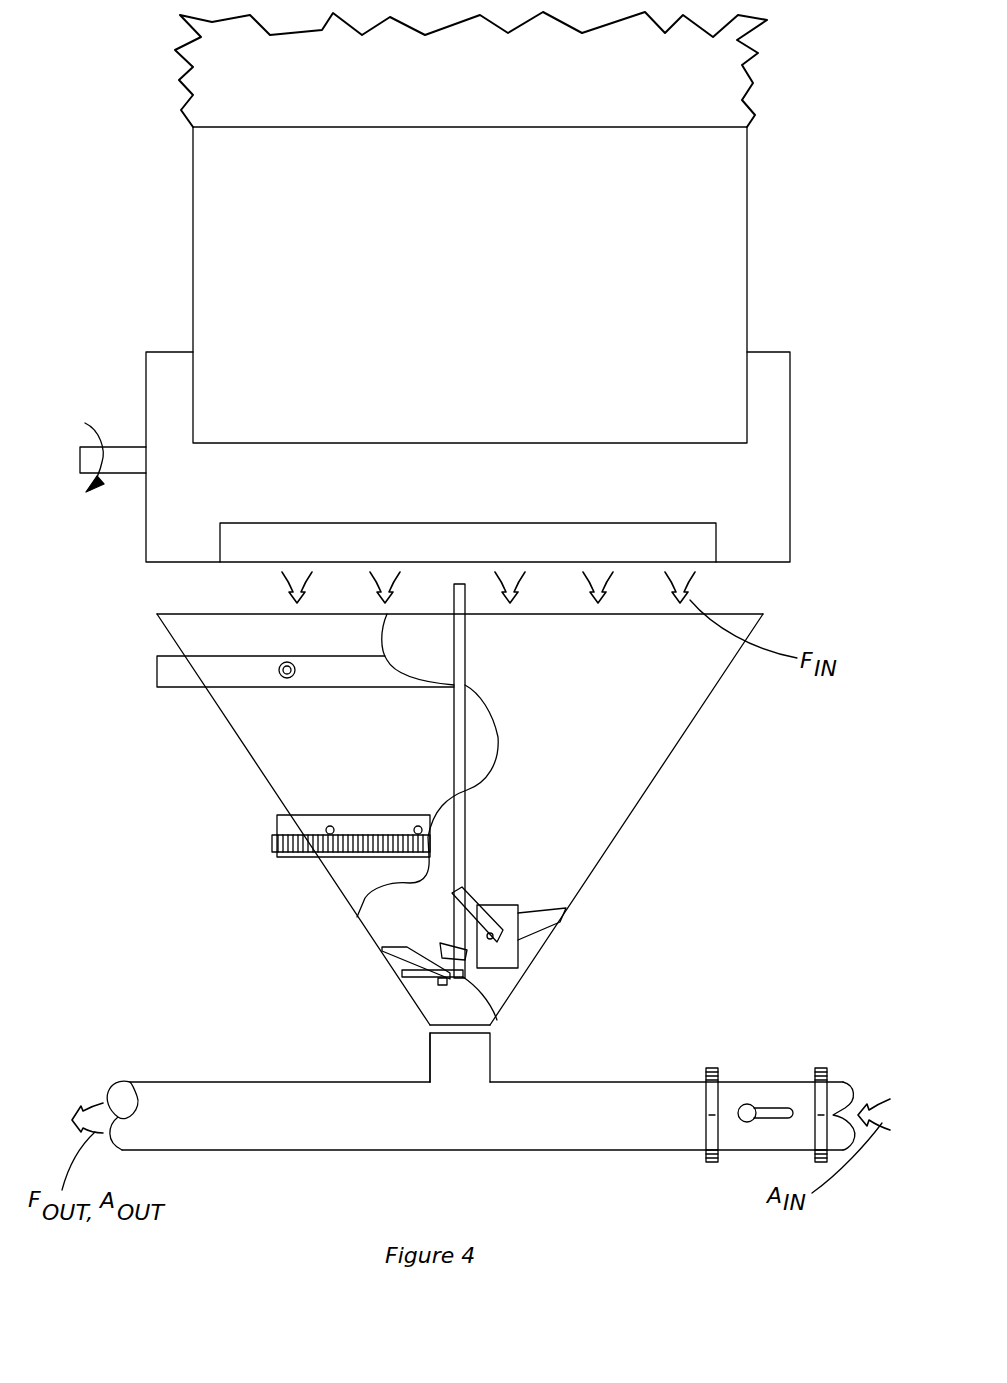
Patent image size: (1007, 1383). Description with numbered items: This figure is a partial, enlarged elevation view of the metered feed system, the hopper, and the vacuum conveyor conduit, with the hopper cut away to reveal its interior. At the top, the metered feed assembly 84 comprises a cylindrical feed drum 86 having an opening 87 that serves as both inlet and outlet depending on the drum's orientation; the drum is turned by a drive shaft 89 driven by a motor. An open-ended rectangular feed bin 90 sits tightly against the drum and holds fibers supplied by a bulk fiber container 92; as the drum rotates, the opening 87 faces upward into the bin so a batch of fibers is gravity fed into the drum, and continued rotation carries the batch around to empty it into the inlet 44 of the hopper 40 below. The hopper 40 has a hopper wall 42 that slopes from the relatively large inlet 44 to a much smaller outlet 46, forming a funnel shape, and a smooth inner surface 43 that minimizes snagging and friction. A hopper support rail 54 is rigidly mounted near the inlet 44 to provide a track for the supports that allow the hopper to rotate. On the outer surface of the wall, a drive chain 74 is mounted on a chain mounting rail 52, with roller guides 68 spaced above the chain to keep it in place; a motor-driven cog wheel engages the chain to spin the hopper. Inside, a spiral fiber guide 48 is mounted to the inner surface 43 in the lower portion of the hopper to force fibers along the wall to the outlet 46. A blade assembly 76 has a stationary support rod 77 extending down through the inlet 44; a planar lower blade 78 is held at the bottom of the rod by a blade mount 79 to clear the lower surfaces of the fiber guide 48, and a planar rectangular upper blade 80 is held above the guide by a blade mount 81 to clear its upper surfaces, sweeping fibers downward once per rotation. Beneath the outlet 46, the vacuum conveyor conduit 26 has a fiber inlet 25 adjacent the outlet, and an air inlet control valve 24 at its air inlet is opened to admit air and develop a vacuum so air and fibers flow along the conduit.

The air inlet control valve 24 is at (740, 1082).
The fiber inlet 25 is at (427, 1037).
The vacuum conveyor conduit 26 is at (180, 1152).
The hopper 40 is at (795, 754).
The hopper wall 42 is at (238, 740).
The inner surface 43 is at (688, 717).
The inlet 44 is at (170, 613).
The outlet 46 is at (479, 1028).
The fiber guide 48 is at (390, 945).
The chain mounting rail 52 is at (308, 857).
The hopper support rail 54 is at (188, 688).
The roller guides 68 is at (330, 830).
The drive chain 74 is at (270, 852).
The blade assembly 76 is at (487, 837).
The support rod 77 is at (465, 636).
The lower blade 78 is at (402, 976).
The blade mount 79 is at (435, 982).
The upper blade 80 is at (507, 960).
The blade mount 81 is at (455, 890).
The metered feed assembly 84 is at (117, 364).
The feed drum 86 is at (790, 437).
The opening 87 is at (716, 543).
The drive shaft 89 is at (128, 468).
The feed bin 90 is at (748, 272).
The bulk fiber container 92 is at (745, 57).